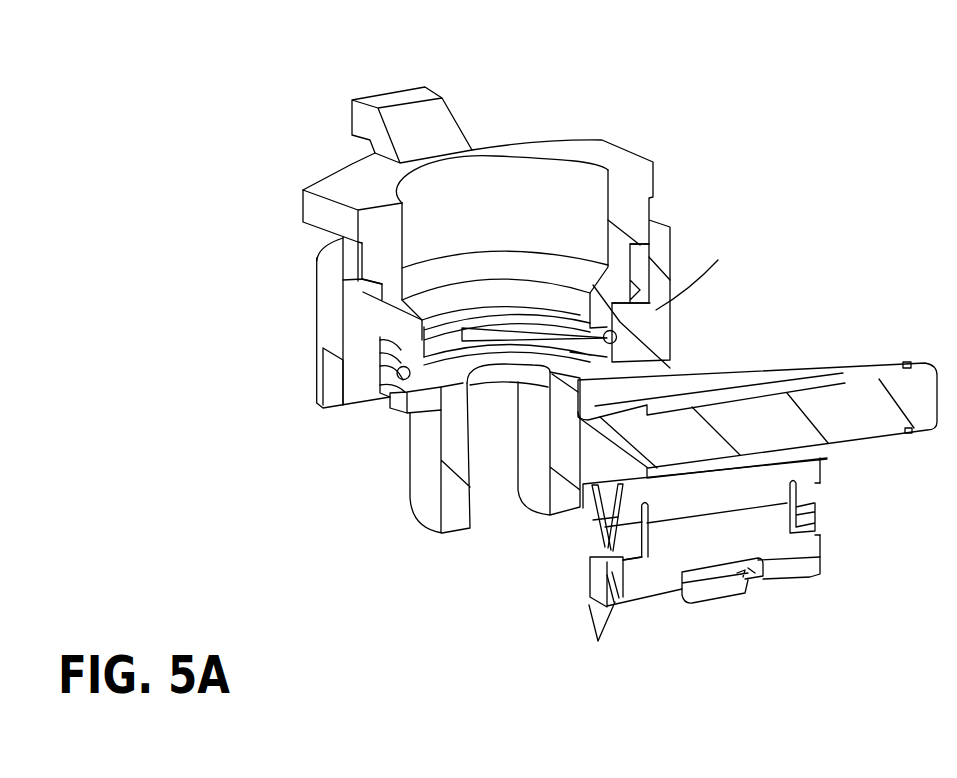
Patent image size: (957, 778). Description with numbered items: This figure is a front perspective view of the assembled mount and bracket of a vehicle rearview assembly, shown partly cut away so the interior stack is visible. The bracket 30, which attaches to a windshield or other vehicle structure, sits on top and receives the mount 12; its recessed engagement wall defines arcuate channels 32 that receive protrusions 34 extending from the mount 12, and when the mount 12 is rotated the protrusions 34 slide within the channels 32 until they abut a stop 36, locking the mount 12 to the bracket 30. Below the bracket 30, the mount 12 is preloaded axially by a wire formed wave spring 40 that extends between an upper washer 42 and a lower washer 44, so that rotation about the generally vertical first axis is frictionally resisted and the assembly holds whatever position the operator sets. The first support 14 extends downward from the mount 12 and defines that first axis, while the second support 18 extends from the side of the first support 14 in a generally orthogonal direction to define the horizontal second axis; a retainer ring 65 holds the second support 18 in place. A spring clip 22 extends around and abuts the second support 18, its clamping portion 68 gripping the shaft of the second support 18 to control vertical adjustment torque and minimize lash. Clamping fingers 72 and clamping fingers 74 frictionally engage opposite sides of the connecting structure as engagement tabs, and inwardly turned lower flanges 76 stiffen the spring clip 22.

The mount 12 is at (323, 291).
The first support 14 is at (423, 460).
The second support 18 is at (947, 363).
The spring clip 22 is at (778, 540).
The bracket 30 is at (582, 150).
The channels 32 is at (376, 330).
The protrusions 34 is at (372, 322).
The stop 36 is at (353, 378).
The wire formed wave spring 40 is at (617, 335).
The upper washer 42 is at (613, 330).
The lower washer 44 is at (618, 350).
The retainer ring 65 is at (910, 363).
The clamping portion 68 is at (772, 380).
The clamping fingers 72 is at (585, 538).
The clamping fingers 74 is at (808, 510).
The inwardly turned lower flanges 76 is at (597, 643).